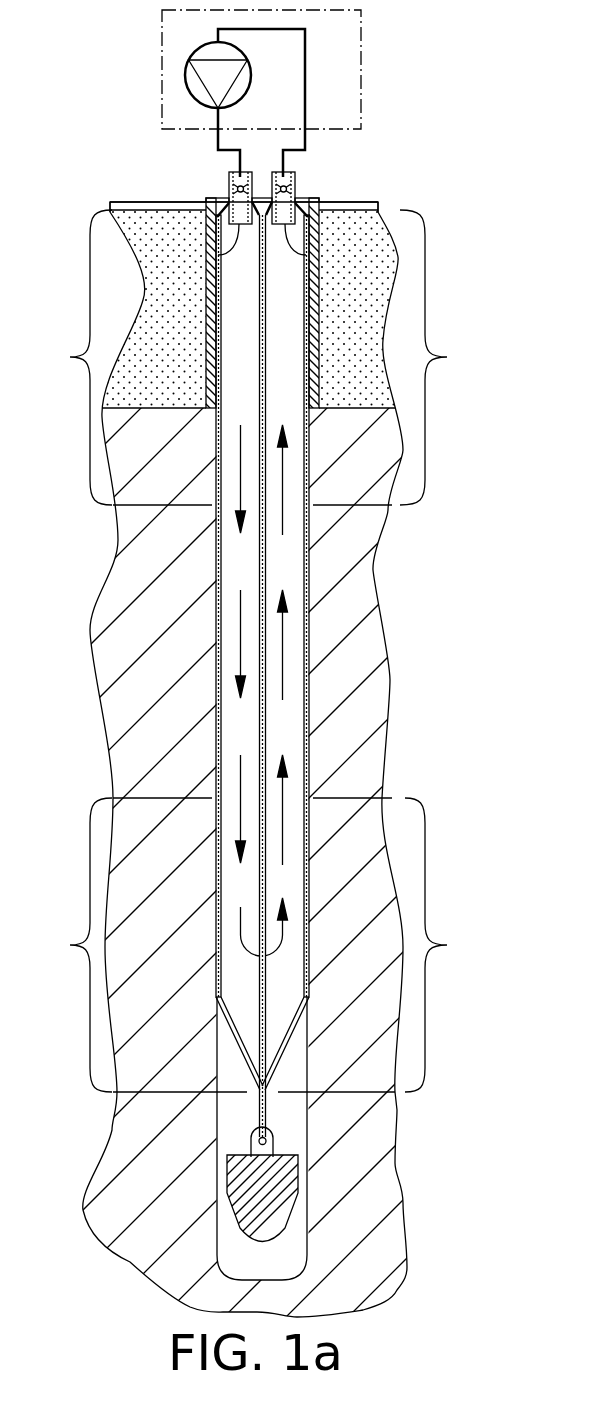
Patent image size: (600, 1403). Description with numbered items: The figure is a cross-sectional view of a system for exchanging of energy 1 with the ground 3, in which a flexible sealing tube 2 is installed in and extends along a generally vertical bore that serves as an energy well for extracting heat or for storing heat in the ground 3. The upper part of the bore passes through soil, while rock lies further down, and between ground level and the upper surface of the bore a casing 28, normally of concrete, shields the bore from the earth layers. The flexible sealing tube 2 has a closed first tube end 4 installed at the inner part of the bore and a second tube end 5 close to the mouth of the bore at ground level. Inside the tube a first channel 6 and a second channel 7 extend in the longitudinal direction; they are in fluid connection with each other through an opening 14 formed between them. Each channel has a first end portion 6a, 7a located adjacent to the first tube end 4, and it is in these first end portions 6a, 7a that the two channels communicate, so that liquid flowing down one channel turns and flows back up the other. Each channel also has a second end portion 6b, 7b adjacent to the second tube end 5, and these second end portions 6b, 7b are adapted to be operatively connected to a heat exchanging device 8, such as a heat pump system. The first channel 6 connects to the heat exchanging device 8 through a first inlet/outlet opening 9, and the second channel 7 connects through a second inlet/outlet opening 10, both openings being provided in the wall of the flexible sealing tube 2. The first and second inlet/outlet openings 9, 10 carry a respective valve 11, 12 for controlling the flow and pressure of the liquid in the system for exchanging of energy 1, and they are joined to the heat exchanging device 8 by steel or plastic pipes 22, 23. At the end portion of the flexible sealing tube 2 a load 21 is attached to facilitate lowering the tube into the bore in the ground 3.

The system for exchanging of energy 1 is at (450, 135).
The flexible sealing tube 2 is at (309, 590).
The ground 3 is at (343, 545).
The first tube end 4 is at (265, 1093).
The second tube end 5 is at (216, 213).
The first channel 6 is at (229, 664).
The first end portion of the first channel 6a is at (144, 945).
The second end portion of the first channel 6b is at (127, 357).
The second channel 7 is at (293, 655).
The first end portion of the second channel 7a is at (380, 945).
The second end portion of the second channel 7b is at (398, 357).
The heat exchanging device 8 is at (150, 51).
The first inlet/outlet opening 9 is at (210, 255).
The second inlet/outlet opening 10 is at (312, 253).
The valve 11 is at (229, 192).
The valve 12 is at (295, 192).
The opening 14 is at (266, 957).
The load 21 is at (266, 1192).
The pipe 22 is at (229, 182).
The pipe 23 is at (295, 182).
The casing 28 is at (314, 290).